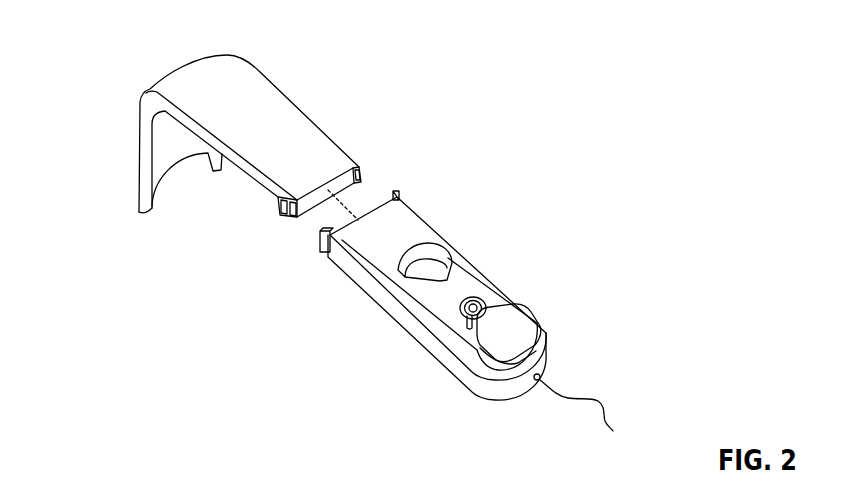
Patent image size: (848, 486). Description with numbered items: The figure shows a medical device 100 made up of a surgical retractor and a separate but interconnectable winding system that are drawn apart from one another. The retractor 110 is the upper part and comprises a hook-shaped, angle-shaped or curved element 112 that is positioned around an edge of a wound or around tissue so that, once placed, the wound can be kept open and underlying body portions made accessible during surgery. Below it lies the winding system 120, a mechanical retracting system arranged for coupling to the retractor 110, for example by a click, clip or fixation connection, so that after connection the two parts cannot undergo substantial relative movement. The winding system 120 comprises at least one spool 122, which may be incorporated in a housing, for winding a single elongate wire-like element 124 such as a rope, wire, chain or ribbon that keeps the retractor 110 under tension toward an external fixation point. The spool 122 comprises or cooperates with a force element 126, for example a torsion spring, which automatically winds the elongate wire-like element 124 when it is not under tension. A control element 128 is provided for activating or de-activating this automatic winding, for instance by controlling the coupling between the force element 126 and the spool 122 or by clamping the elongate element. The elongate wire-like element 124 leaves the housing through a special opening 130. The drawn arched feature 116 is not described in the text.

The medical device 100 is at (84, 46).
The retractor 110 is at (423, 85).
The hook-shaped, angle-shaped or curved element 112 is at (137, 142).
The arched protrusion 116 is at (407, 286).
The winding system 120 is at (563, 350).
The spool 122 is at (491, 286).
The elongate wire-like element 124 is at (608, 418).
The force element 126 is at (454, 311).
The control element 128 is at (494, 345).
The opening 130 is at (542, 377).